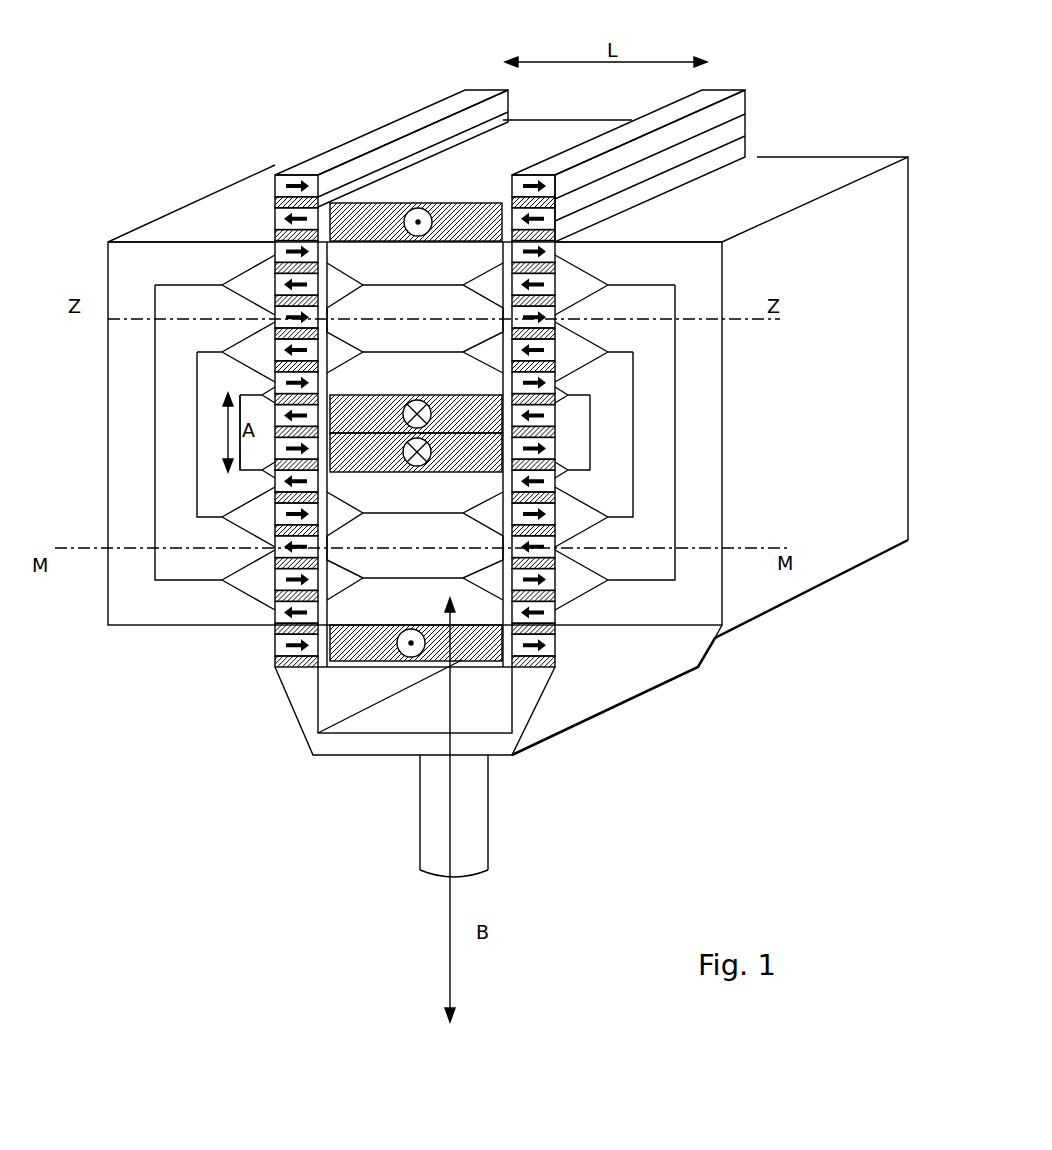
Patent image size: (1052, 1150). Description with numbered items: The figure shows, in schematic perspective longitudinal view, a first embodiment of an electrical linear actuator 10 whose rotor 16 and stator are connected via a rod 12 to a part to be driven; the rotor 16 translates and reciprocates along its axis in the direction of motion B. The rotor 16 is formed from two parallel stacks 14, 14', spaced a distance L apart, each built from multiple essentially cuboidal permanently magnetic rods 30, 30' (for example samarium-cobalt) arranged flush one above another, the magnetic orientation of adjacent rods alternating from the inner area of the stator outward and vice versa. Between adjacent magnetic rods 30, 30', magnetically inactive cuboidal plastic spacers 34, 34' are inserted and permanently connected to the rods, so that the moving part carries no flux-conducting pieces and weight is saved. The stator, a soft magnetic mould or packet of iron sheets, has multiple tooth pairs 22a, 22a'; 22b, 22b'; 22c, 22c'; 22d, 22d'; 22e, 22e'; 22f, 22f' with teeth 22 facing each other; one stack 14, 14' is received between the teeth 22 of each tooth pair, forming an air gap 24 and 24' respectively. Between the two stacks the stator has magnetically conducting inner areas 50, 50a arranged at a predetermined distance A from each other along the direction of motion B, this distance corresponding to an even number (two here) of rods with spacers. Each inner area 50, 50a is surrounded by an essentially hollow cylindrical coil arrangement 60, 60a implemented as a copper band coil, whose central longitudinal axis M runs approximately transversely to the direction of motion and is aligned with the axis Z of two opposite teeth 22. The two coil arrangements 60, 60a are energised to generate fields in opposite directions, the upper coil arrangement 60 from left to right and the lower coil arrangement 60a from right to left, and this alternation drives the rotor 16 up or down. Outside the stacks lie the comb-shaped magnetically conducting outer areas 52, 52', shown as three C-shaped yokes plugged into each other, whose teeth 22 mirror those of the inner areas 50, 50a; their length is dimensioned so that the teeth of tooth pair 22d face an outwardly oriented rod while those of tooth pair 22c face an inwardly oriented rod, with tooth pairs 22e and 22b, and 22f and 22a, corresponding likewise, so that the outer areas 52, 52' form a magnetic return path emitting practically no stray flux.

The electrical linear actuator 10 is at (330, 787).
The rod 12 is at (492, 790).
The stack 14 is at (416, 92).
The stack 14' is at (659, 94).
The rotor 16 is at (290, 708).
The teeth 22 is at (338, 262).
The tooth pair 22a is at (153, 206).
The tooth pair 22b is at (153, 271).
The tooth pair 22c is at (154, 339).
The tooth pair 22d is at (153, 433).
The tooth pair 22e is at (153, 503).
The tooth pair 22f is at (153, 567).
The tooth pair 22a' is at (715, 242).
The tooth pair 22b' is at (715, 297).
The tooth pair 22c' is at (713, 364).
The tooth pair 22d' is at (714, 445).
The tooth pair 22e' is at (714, 528).
The tooth pair 22f' is at (710, 592).
The air gap 24 is at (233, 659).
The air gap 24' is at (598, 677).
The permanently magnetic rod 30 is at (270, 369).
The permanently magnetic rod 30' is at (679, 337).
The spacer 34 is at (413, 131).
The spacer 34' is at (743, 167).
The inner area 50 is at (415, 318).
The inner area 50a is at (415, 546).
The outer area 52 is at (415, 416).
The outer area 52' is at (705, 437).
The coil arrangement 60 is at (567, 437).
The coil arrangement 60a is at (508, 655).